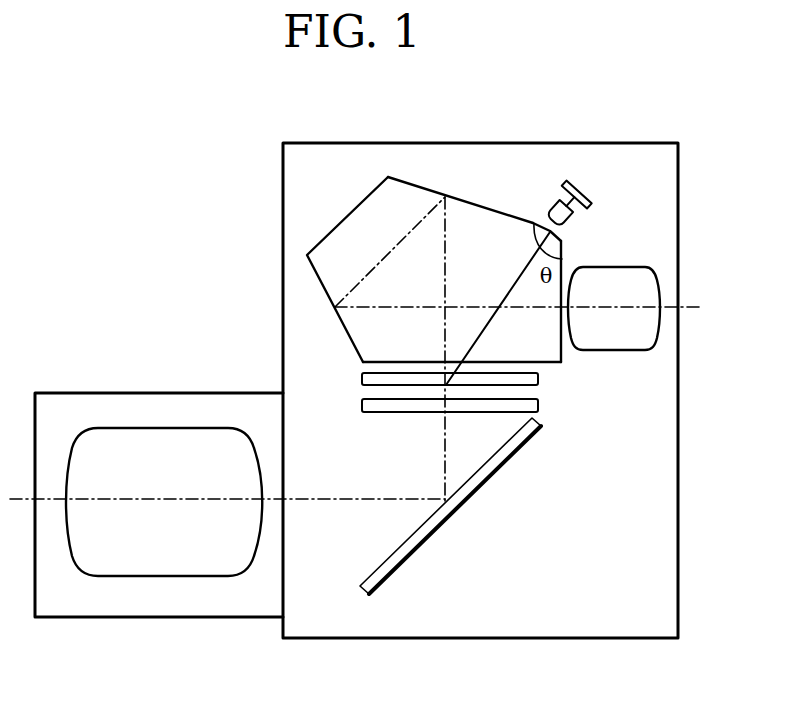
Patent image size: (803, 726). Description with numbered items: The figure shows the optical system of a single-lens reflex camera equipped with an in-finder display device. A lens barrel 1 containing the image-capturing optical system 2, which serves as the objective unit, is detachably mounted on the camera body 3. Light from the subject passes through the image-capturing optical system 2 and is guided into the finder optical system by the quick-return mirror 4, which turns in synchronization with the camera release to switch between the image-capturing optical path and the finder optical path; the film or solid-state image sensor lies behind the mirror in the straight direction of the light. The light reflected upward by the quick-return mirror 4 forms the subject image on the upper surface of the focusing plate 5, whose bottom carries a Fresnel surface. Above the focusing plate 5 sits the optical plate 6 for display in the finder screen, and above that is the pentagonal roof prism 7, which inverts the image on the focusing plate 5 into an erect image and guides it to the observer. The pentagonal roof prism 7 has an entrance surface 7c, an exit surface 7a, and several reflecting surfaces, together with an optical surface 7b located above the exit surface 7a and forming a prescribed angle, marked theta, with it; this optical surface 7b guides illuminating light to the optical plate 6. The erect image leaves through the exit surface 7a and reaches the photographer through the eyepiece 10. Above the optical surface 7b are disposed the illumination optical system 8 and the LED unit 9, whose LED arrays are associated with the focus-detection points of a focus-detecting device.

The lens barrel 1 is at (106, 393).
The image-capturing optical system 2 is at (172, 428).
The camera body 3 is at (361, 640).
The quick-return mirror 4 is at (432, 535).
The focusing plate 5 is at (540, 404).
The optical plate 6 is at (540, 380).
The pentagonal roof prism 7 is at (482, 269).
The exit surface 7a is at (562, 258).
The optical surface 7b is at (563, 237).
The entrance surface 7c is at (395, 362).
The illumination optical system 8 is at (552, 210).
The LED unit 9 is at (584, 191).
The eyepiece 10 is at (660, 290).